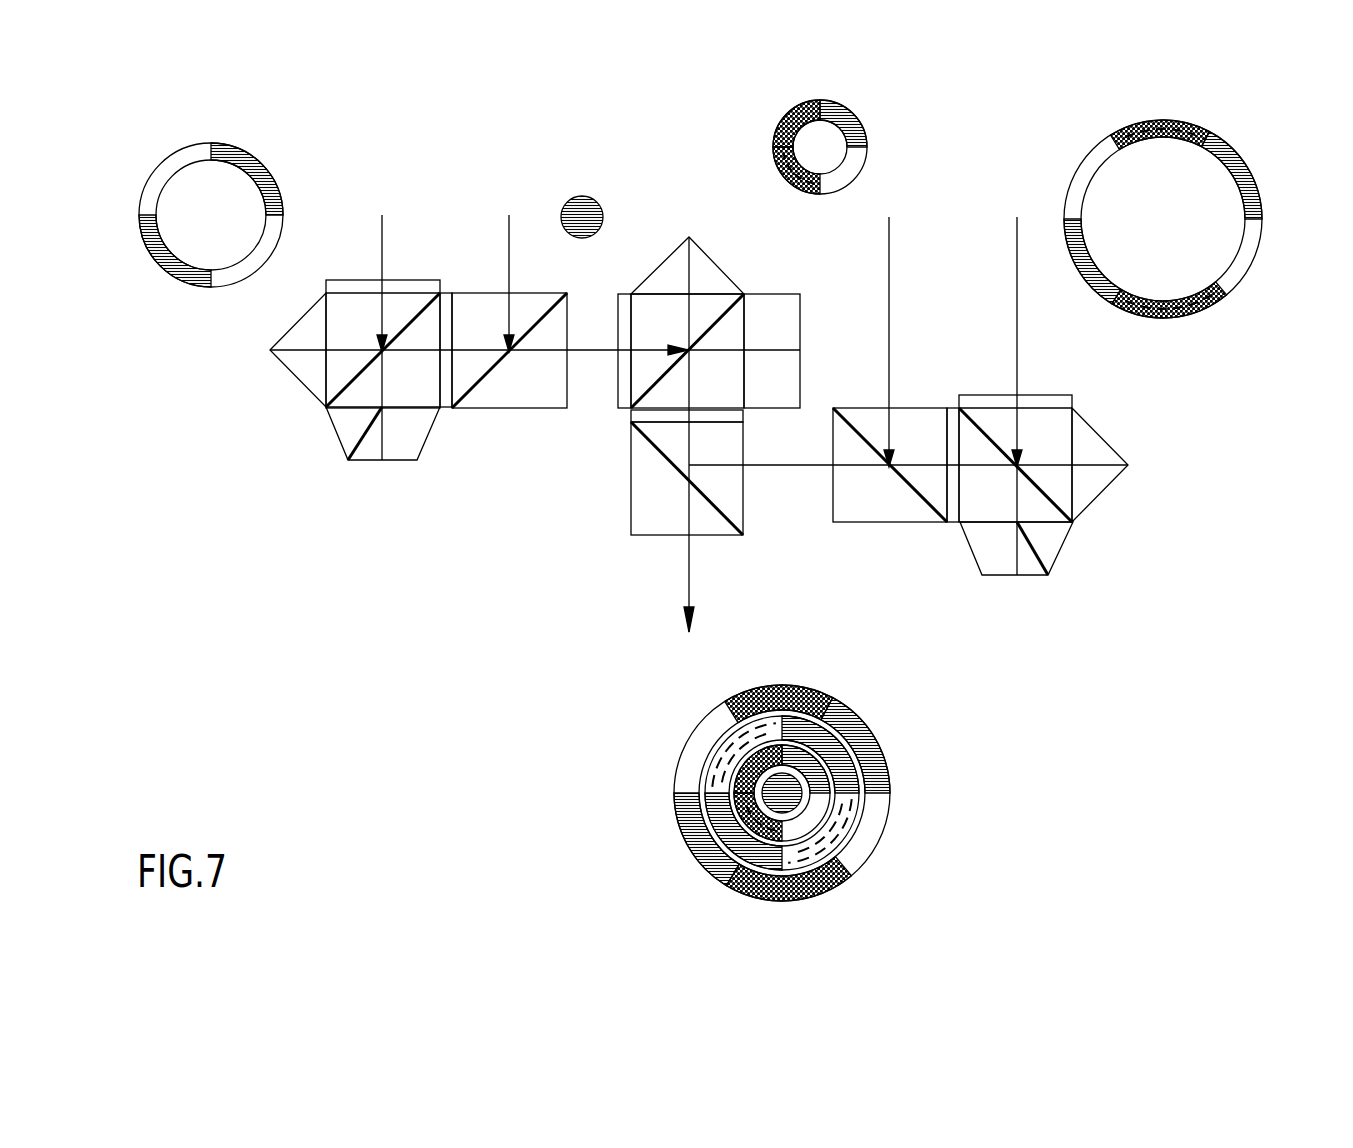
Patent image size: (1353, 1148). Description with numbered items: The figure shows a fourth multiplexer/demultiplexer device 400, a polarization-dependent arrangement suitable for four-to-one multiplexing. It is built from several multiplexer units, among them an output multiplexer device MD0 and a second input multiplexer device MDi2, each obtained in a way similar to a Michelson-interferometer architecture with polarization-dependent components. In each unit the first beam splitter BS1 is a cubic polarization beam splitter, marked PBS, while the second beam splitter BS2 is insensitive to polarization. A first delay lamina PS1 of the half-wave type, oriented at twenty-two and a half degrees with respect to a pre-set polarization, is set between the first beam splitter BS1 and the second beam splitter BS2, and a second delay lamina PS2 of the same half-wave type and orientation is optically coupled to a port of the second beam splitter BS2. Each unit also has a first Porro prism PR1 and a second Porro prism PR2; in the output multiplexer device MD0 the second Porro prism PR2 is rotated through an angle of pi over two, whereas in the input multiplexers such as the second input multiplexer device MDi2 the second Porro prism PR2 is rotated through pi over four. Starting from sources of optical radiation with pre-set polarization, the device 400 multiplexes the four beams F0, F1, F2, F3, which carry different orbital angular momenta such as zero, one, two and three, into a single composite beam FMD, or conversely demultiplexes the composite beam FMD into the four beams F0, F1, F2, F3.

The fourth multiplexer/demultiplexer device 400 is at (472, 753).
The second beam splitter BS2 is at (340, 328).
The first beam splitter BS1 is at (468, 408).
The first Porro prism PR1 is at (302, 370).
The second Porro prism PR2 is at (335, 437).
The first delay lamina PS1 is at (445, 408).
The second delay lamina PS2 is at (615, 328).
The beam F0 is at (495, 268).
The beam F1 is at (876, 326).
The beam F2 is at (367, 322).
The beam F3 is at (1003, 380).
The second input multiplexer device MDi2 is at (268, 436).
The output multiplexer device MD0 is at (592, 530).
The composite beam FMD is at (897, 703).